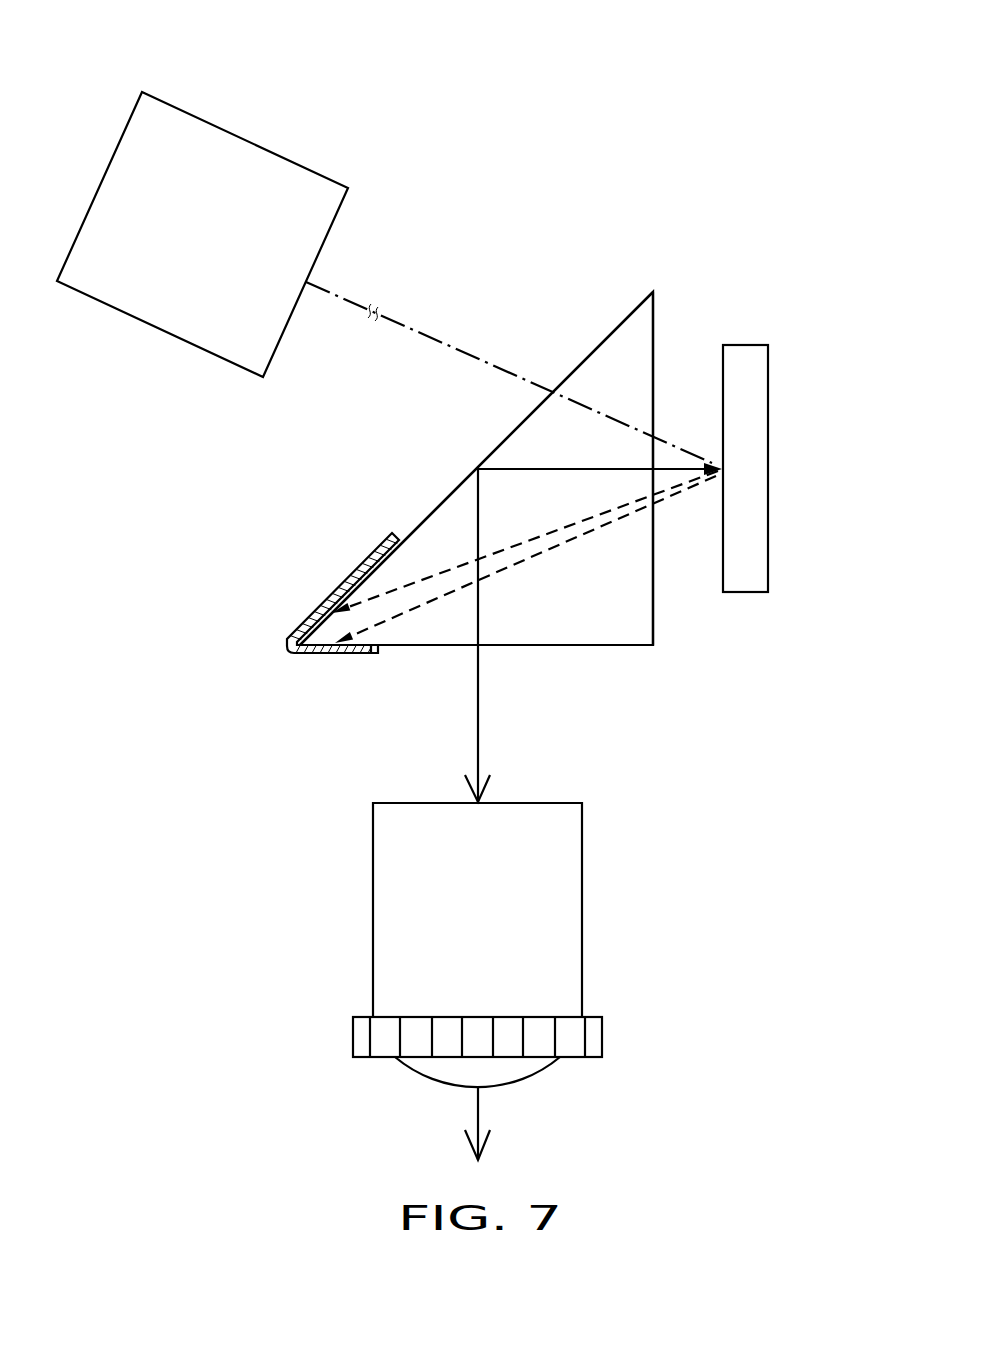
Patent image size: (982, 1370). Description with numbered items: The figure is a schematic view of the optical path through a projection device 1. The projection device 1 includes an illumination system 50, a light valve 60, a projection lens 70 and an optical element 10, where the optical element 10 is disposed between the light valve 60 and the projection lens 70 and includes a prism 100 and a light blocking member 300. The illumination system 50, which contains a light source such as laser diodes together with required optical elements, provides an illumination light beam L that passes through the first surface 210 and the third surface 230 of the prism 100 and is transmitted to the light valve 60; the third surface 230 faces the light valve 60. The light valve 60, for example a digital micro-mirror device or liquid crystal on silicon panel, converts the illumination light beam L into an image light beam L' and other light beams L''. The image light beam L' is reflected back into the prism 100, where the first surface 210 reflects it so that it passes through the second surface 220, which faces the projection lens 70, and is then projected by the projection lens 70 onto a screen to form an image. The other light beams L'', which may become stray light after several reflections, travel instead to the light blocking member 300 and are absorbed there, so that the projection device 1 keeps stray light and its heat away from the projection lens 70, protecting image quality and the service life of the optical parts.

The projection device 1 is at (89, 42).
The illumination system 50 is at (213, 153).
The illumination light beam L is at (509, 317).
The optical element 10 is at (530, 345).
The prism 100 is at (637, 355).
The first surface 210 is at (598, 348).
The third surface 230 is at (655, 620).
The second surface 220 is at (407, 647).
The light valve 60 is at (752, 472).
The other light beams L'' is at (525, 606).
The light blocking member 300 is at (328, 597).
The image light beam L' is at (509, 635).
The projection lens 70 is at (543, 917).